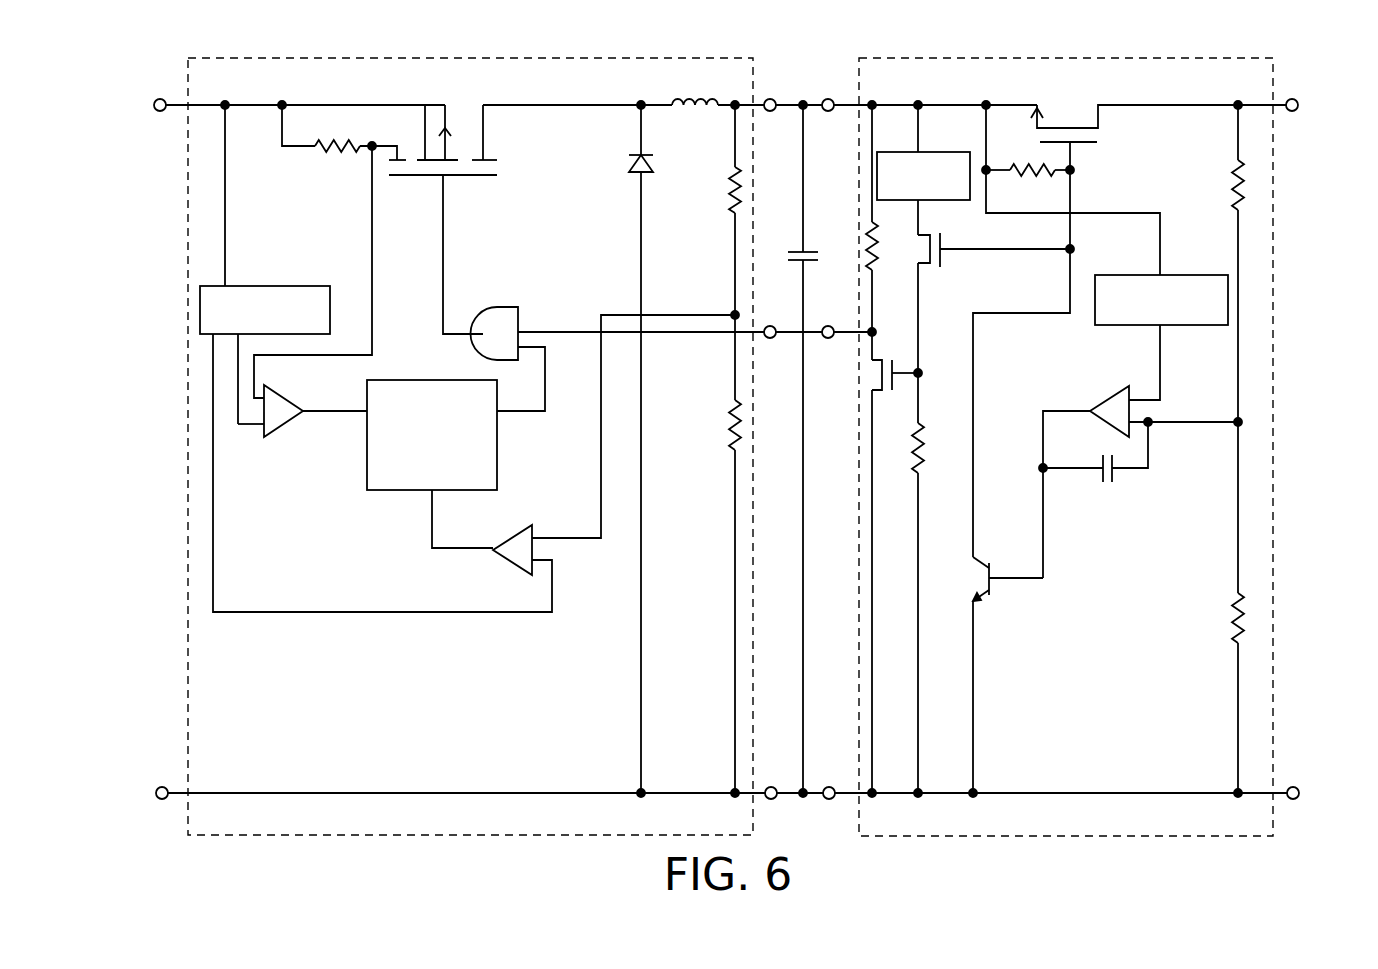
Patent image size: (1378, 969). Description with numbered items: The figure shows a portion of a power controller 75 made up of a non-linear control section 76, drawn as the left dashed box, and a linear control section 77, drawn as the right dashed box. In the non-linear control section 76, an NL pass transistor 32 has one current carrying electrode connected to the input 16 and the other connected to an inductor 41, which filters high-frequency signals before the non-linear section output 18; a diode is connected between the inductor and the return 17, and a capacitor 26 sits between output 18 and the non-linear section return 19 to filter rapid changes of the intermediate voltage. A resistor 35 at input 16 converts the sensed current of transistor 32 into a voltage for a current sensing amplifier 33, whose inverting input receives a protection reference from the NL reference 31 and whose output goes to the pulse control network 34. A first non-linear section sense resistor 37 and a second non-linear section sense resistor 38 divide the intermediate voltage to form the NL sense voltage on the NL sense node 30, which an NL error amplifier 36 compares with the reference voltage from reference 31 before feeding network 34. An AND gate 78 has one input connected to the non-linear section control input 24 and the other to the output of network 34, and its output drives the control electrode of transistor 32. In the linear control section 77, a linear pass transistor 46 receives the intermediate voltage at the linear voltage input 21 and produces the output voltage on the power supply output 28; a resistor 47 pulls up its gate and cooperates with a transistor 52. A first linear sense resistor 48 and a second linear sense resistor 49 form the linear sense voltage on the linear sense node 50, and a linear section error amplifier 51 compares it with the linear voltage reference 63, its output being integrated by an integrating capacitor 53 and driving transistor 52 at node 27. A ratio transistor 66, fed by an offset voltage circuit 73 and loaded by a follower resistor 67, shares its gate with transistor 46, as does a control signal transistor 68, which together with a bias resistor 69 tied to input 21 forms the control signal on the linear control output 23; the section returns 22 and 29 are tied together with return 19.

The input 16 is at (155, 109).
The return 17 is at (156, 793).
The non-linear section output 18 is at (774, 99).
The non-linear section return 19 is at (773, 800).
The linear voltage input 21 is at (830, 99).
The return 22 is at (830, 786).
The linear control output 23 is at (829, 339).
The non-linear section control input 24 is at (771, 339).
The capacitor 26 is at (810, 260).
The amplifier output node 27 is at (1038, 470).
The power supply output 28 is at (1298, 107).
The power supply return 29 is at (1299, 795).
The NL sense node 30 is at (733, 313).
The NL reference 31 is at (270, 285).
The NL pass transistor 32 is at (487, 167).
The current sensing amplifier 33 is at (293, 434).
The pulse control network 34 is at (498, 460).
The resistor 35 is at (330, 155).
The NL error amplifier 36 is at (507, 532).
The first non-linear section sense resistor 37 is at (727, 205).
The second non-linear section sense resistor 38 is at (727, 445).
The inductor 41 is at (690, 110).
The linear pass transistor 46 is at (1100, 142).
The resistor 47 is at (1025, 172).
The first linear sense resistor 48 is at (1228, 175).
The second linear sense resistor 49 is at (1232, 645).
The linear sense node 50 is at (1245, 422).
The linear section error amplifier 51 is at (1108, 402).
The transistor 52 is at (988, 580).
The integrating capacitor 53 is at (1108, 485).
The linear voltage reference 63 is at (1165, 278).
The ratio transistor 66 is at (940, 265).
The follower resistor 67 is at (910, 448).
The control signal transistor 68 is at (885, 390).
The bias resistor 69 is at (880, 250).
The offset voltage circuit 73 is at (930, 150).
The power controller 75 is at (1140, 892).
The non-linear control section 76 is at (395, 836).
The linear control section 77 is at (935, 837).
The AND gate 78 is at (503, 305).